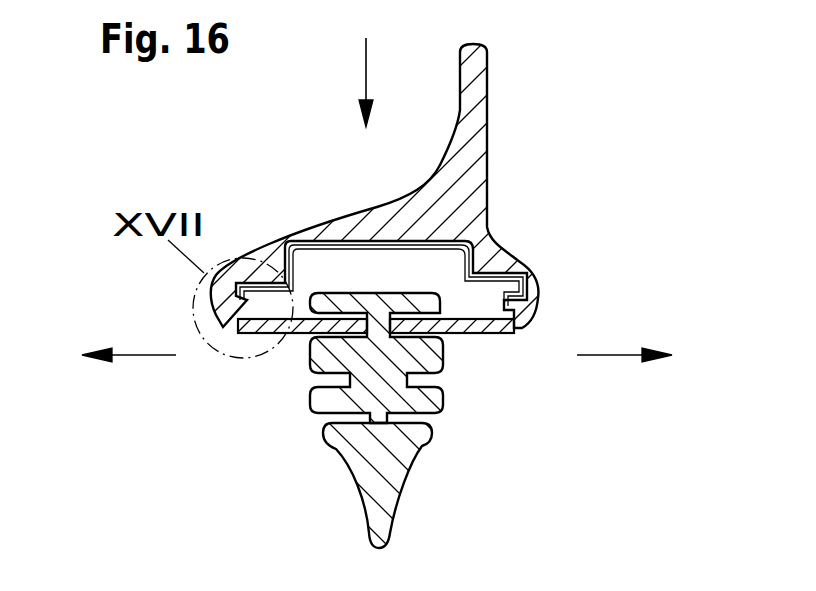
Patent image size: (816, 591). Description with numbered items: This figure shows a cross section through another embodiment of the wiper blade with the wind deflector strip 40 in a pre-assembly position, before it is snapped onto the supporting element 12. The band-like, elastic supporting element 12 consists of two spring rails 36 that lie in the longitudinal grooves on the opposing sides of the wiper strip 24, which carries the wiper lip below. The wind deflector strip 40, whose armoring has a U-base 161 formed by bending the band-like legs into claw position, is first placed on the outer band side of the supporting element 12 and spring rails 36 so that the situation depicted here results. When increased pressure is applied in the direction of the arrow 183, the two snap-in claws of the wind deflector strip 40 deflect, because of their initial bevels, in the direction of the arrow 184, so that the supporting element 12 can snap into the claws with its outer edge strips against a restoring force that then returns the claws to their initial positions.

The supporting element 12 is at (296, 341).
The wiper strip 24 is at (322, 420).
The spring rail 36 is at (258, 328).
The wind deflector strip 40 is at (530, 195).
The U-base 161 is at (297, 241).
The arrow 183 is at (366, 62).
The arrow 184 is at (141, 355).